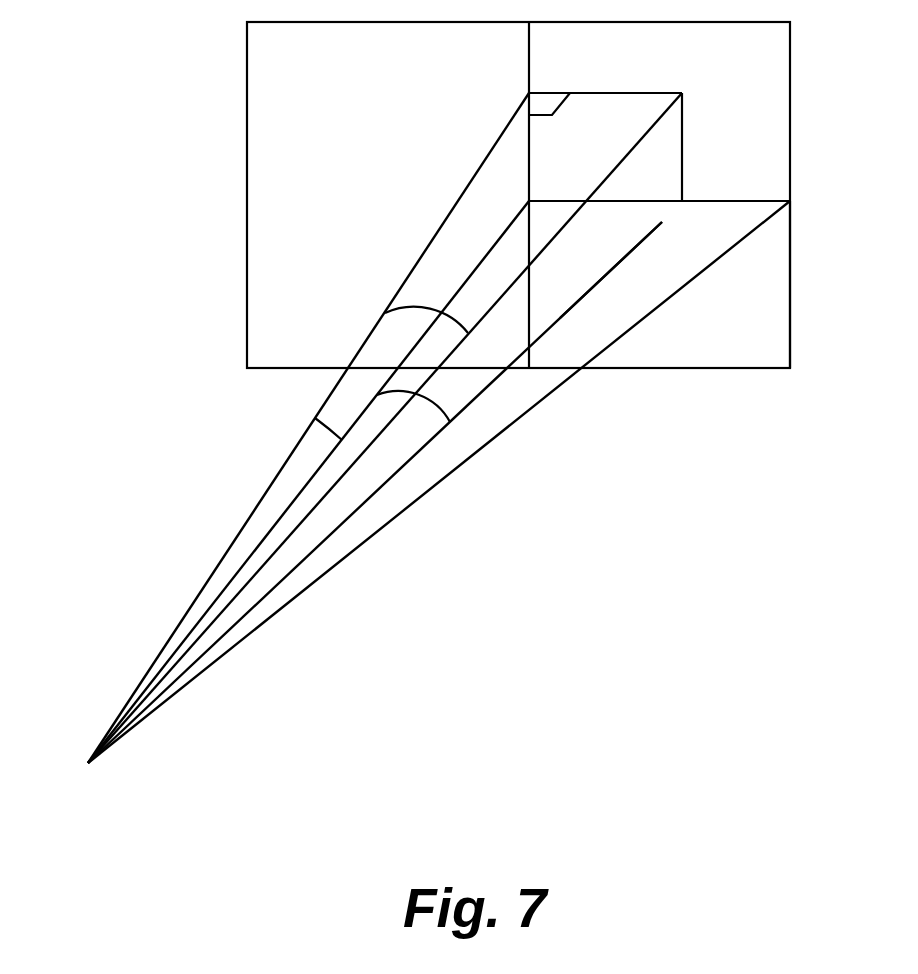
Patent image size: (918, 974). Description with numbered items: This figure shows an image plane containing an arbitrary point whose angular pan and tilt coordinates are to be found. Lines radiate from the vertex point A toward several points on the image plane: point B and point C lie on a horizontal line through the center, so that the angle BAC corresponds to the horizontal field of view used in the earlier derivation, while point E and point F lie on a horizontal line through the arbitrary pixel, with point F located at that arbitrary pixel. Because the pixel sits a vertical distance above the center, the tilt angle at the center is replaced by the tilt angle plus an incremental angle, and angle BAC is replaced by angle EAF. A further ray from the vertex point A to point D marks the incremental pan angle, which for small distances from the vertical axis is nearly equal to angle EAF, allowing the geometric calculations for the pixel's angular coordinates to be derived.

The vertex point A is at (427, 441).
The point B is at (649, 188).
The point C is at (803, 277).
The point D is at (625, 262).
The point E is at (596, 89).
The point F is at (729, 129).